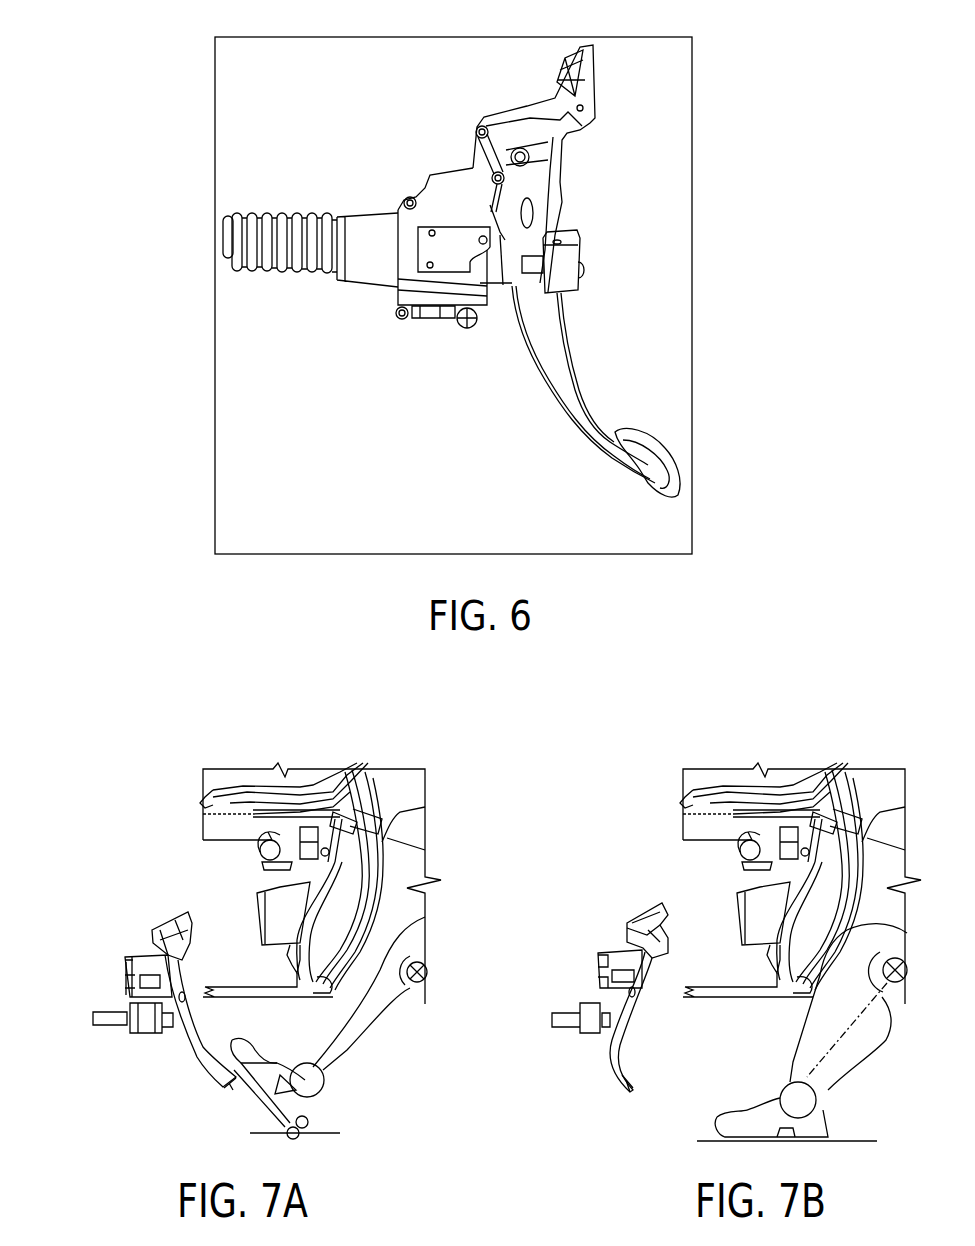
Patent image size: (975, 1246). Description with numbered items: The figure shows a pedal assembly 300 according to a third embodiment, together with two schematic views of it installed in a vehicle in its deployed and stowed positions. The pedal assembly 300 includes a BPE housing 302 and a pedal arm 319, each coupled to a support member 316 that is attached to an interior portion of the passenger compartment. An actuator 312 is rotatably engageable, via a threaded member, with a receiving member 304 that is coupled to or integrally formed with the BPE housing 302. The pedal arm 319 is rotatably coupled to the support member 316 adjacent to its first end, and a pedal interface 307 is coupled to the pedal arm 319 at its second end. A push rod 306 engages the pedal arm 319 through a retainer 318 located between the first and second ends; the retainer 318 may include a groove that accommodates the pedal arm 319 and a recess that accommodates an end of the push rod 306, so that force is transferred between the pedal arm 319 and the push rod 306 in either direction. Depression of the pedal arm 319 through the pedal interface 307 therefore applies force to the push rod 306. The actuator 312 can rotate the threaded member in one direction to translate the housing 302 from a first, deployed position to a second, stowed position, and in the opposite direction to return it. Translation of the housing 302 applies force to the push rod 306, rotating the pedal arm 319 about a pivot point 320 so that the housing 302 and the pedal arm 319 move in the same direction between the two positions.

In FIG. 6, the pedal assembly 300 is at (158, 105).
In FIG. 7A, the pedal assembly 300 is at (62, 998).
In FIG. 7B, the pedal assembly 300 is at (533, 998).
In FIG. 6, the BPE housing 302 is at (412, 293).
In FIG. 6, the receiving member 304 is at (372, 263).
In FIG. 6, the push rod 306 is at (530, 250).
In FIG. 6, the pedal interface 307 is at (667, 453).
In FIG. 6, the actuator 312 is at (270, 212).
In FIG. 6, the support member 316 is at (510, 125).
In FIG. 6, the retainer 318 is at (567, 286).
In FIG. 6, the pedal arm 319 is at (575, 412).
In FIG. 7A, the pivot point 320 is at (167, 928).